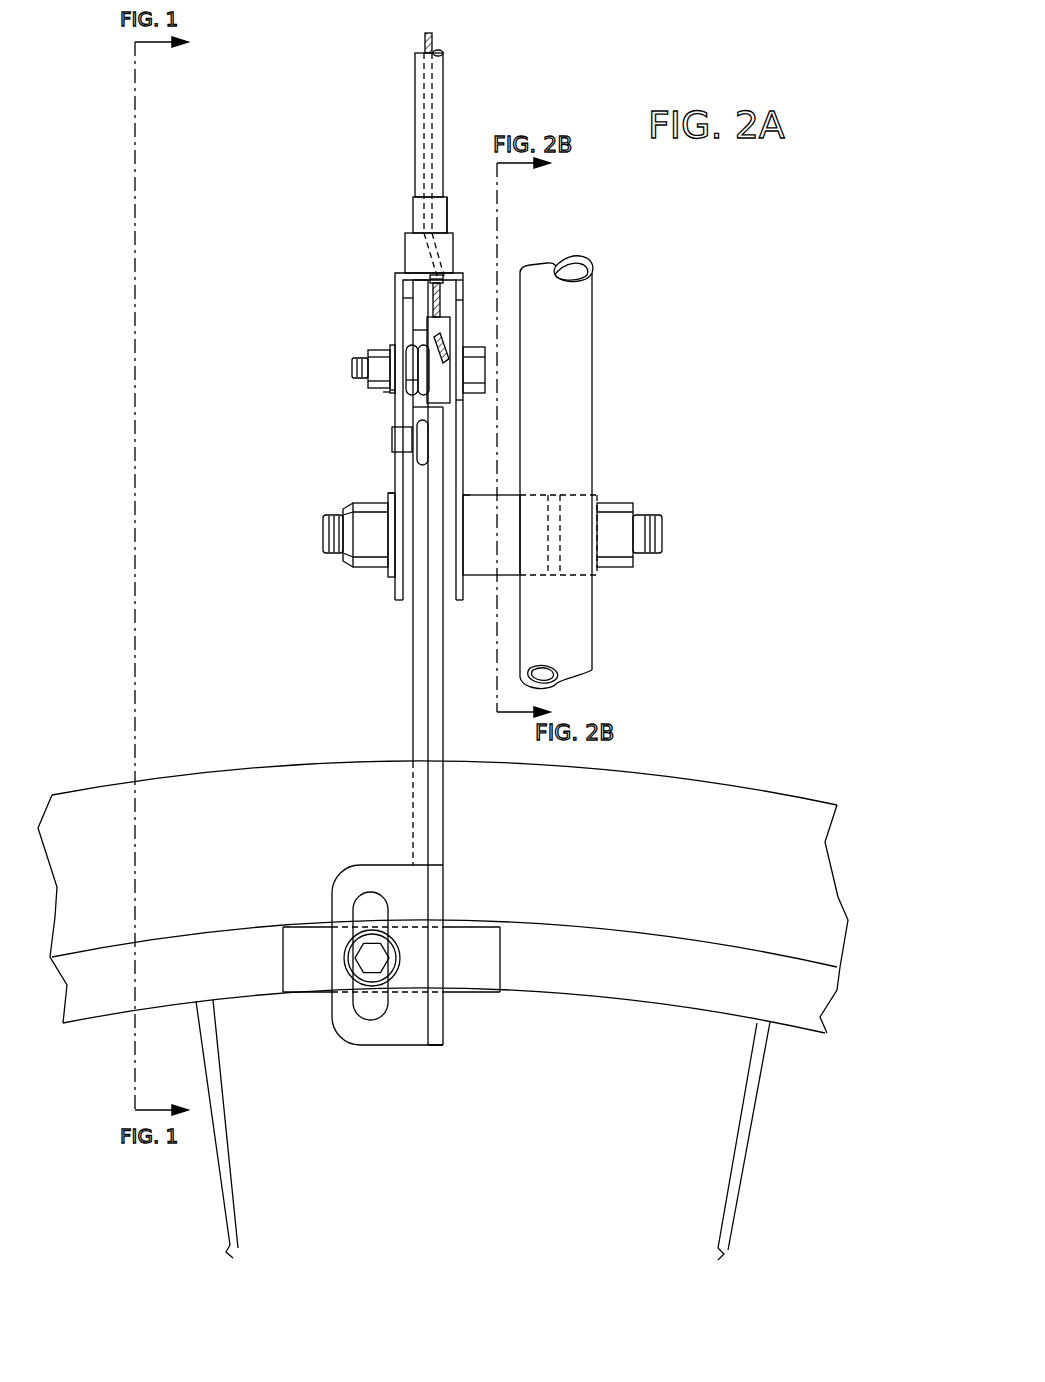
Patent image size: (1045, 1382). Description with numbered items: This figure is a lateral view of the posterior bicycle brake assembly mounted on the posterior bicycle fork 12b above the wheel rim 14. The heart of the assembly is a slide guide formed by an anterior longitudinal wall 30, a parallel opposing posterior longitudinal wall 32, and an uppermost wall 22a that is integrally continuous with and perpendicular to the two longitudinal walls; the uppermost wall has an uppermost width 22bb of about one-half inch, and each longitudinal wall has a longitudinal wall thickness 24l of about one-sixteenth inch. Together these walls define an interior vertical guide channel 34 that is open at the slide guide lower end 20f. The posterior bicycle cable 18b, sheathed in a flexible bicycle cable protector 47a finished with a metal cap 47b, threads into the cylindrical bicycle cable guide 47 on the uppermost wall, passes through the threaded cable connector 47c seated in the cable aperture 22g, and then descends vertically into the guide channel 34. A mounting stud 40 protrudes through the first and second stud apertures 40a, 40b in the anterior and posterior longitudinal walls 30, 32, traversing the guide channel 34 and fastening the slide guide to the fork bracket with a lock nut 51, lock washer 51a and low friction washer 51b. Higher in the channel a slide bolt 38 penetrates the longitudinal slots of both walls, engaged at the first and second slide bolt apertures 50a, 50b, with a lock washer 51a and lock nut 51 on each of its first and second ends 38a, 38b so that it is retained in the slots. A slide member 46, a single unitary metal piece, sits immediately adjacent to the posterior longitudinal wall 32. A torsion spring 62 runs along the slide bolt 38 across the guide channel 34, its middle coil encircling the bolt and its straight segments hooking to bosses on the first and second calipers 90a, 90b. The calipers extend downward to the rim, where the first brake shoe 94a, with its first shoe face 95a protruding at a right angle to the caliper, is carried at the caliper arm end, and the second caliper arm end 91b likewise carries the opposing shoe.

The bicycle rim 14 is at (766, 794).
The posterior bicycle fork 12b is at (593, 330).
The posterior bicycle cable 18b is at (434, 40).
The slide guide lower end 20f is at (448, 603).
The uppermost wall 22a is at (456, 276).
The uppermost width 22bb is at (398, 276).
The cable aperture 22g is at (465, 287).
The longitudinal wall thickness 24l is at (400, 600).
The anterior longitudinal wall 30 is at (413, 298).
The posterior longitudinal wall 32 is at (462, 305).
The guide channel 34 is at (405, 330).
The slide bolt 38 is at (386, 392).
The first end 38a is at (387, 390).
The second end 38b is at (465, 408).
The mounting stud 40 is at (328, 514).
The first stud aperture 40a is at (394, 497).
The second stud aperture 40b is at (475, 482).
The slide member 46 is at (445, 330).
The cylindrical bicycle cable guide 47 is at (412, 245).
The bicycle cable protector 47a is at (415, 133).
The metal cap 47b is at (447, 210).
The threaded cable connector 47c is at (432, 280).
The first slide bolt aperture 50a is at (393, 338).
The second slide bolt aperture 50b is at (488, 367).
The lock nut 51 is at (372, 962).
The lock washer 51a is at (410, 372).
The low friction washer 51b is at (348, 948).
The torsion spring 62 is at (412, 380).
The first caliper 90a is at (413, 728).
The second caliper 90b is at (448, 762).
The second caliper arm end 91b is at (434, 1046).
The first brake shoe 94a is at (297, 962).
The first shoe face 95a is at (338, 1046).